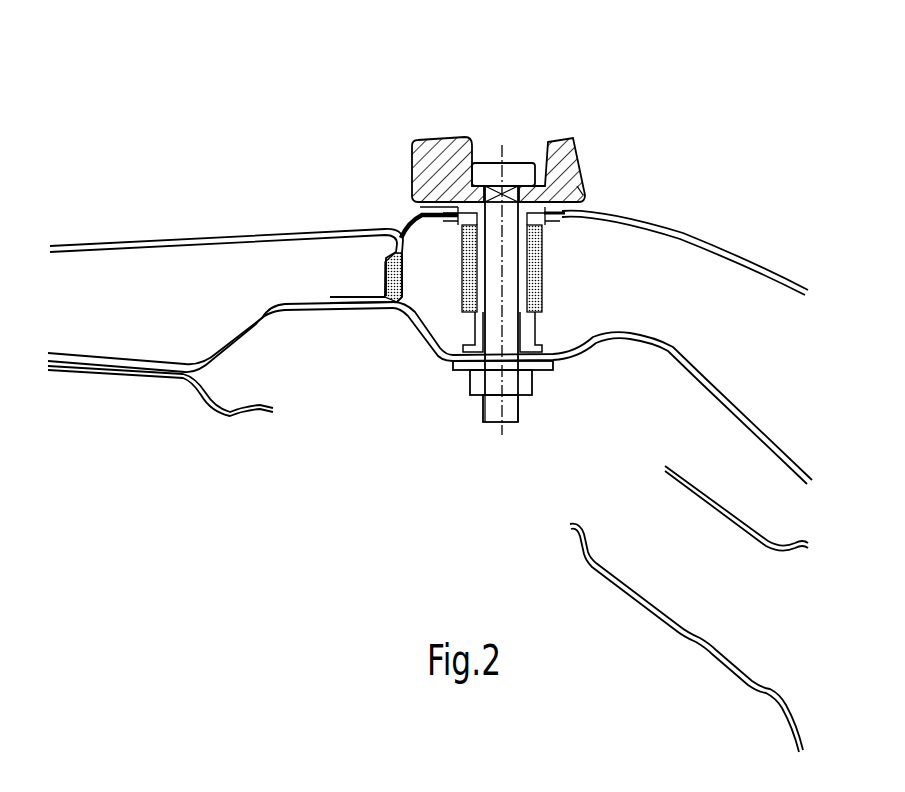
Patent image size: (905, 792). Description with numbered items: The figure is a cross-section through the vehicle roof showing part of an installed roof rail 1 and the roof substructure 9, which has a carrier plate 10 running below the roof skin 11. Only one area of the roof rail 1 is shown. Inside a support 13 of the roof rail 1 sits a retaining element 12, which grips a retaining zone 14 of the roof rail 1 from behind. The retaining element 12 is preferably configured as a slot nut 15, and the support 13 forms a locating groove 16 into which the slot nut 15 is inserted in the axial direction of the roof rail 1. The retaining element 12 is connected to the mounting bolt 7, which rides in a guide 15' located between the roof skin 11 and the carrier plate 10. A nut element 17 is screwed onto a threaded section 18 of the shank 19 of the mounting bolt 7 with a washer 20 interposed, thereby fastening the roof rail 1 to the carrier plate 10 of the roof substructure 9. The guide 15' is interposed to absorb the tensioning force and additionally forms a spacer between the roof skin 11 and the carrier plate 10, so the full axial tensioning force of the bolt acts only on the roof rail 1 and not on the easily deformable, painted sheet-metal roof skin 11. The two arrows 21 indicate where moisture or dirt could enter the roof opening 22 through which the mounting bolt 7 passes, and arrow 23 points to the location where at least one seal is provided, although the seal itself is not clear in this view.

The roof rail 1 is at (425, 118).
The mounting bolt 7 is at (507, 297).
The roof substructure 9 is at (281, 285).
The carrier plate 10 is at (298, 310).
The roof skin 11 is at (313, 233).
The retaining element 12 is at (523, 175).
The support 13 is at (573, 153).
The retaining zone 14 is at (580, 183).
The slot nut 15 is at (500, 233).
The guide 15' is at (449, 347).
The locating groove 16 is at (552, 160).
The nut element 17 is at (524, 386).
The threaded section 18 is at (492, 410).
The shank 19 is at (495, 333).
The washer 20 is at (552, 370).
The arrows 21 is at (427, 209).
The roof opening 22 is at (385, 280).
The arrow 23 is at (547, 233).